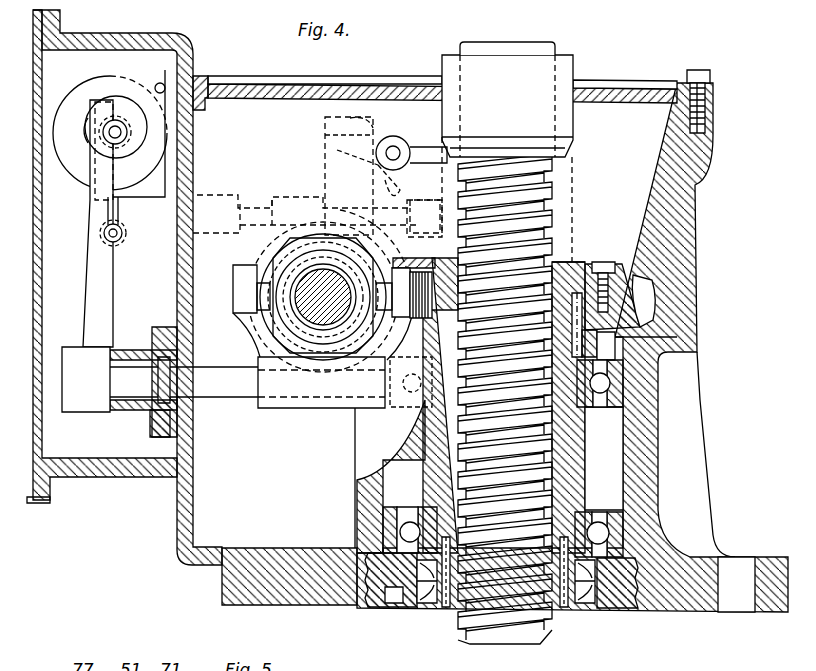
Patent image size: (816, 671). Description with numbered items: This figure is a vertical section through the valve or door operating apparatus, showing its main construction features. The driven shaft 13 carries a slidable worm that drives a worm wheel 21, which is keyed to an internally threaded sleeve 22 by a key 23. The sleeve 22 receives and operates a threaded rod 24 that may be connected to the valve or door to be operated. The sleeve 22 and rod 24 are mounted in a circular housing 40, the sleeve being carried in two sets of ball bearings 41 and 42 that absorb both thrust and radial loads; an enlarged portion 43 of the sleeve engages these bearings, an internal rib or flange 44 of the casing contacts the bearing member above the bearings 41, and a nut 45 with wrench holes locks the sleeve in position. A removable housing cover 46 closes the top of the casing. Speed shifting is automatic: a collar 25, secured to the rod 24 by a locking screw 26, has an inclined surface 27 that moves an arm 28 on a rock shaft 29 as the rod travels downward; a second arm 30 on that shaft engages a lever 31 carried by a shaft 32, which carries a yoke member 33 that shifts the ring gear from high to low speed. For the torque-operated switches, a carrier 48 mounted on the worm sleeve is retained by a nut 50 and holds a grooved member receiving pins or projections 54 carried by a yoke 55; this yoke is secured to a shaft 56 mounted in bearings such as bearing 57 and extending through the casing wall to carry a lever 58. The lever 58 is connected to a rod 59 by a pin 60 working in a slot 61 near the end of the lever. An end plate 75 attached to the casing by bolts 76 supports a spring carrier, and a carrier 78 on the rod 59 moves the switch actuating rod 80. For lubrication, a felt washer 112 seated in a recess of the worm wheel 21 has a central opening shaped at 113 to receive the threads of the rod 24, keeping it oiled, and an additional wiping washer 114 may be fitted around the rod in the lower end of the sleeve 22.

The driven shaft 13 is at (323, 318).
The worm wheel 21 is at (633, 275).
The internally threaded sleeve 22 is at (560, 515).
The key 23 is at (580, 322).
The threaded rod 24 is at (520, 613).
The collar 25 is at (568, 73).
The locking screw 26 is at (462, 46).
The inclined surface 27 is at (570, 149).
The arm 28 is at (423, 147).
The rock shaft 29 is at (395, 140).
The second arm 30 is at (340, 147).
The lever 31 is at (337, 123).
The shaft 32 is at (257, 203).
The yoke member 33 is at (248, 245).
The circular housing 40 is at (688, 238).
The ball bearings 41 is at (602, 382).
The ball bearings 42 is at (602, 533).
The enlarged portion 43 is at (585, 452).
The internal rib or flange 44 is at (620, 353).
The nut 45 is at (393, 597).
The housing cover 46 is at (630, 95).
The carrier 48 is at (272, 310).
The nut 50 is at (267, 340).
The pins or projections 54 is at (260, 297).
The yoke 55 is at (233, 275).
The shaft 56 is at (230, 387).
The bearing 57 is at (157, 423).
The lever 58 is at (103, 285).
The rod 59 is at (120, 110).
The pin 60 is at (86, 126).
The slot 61 is at (90, 93).
The end plate 75 is at (80, 167).
The bolts 76 is at (163, 100).
The carrier 78 is at (127, 213).
The switch actuating rod 80 is at (123, 247).
The felt washer 112 is at (582, 265).
The shaped opening surface 113 is at (553, 262).
The wiping washer 114 is at (577, 608).